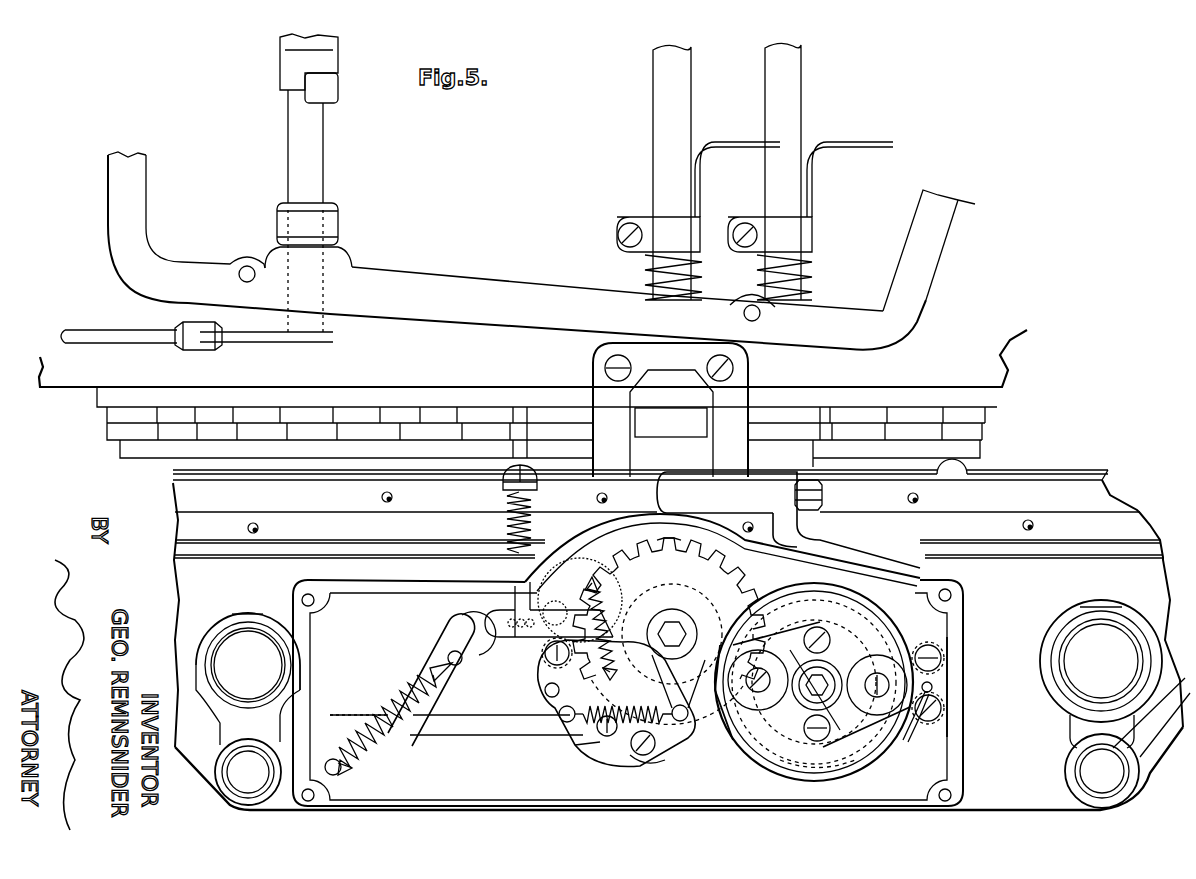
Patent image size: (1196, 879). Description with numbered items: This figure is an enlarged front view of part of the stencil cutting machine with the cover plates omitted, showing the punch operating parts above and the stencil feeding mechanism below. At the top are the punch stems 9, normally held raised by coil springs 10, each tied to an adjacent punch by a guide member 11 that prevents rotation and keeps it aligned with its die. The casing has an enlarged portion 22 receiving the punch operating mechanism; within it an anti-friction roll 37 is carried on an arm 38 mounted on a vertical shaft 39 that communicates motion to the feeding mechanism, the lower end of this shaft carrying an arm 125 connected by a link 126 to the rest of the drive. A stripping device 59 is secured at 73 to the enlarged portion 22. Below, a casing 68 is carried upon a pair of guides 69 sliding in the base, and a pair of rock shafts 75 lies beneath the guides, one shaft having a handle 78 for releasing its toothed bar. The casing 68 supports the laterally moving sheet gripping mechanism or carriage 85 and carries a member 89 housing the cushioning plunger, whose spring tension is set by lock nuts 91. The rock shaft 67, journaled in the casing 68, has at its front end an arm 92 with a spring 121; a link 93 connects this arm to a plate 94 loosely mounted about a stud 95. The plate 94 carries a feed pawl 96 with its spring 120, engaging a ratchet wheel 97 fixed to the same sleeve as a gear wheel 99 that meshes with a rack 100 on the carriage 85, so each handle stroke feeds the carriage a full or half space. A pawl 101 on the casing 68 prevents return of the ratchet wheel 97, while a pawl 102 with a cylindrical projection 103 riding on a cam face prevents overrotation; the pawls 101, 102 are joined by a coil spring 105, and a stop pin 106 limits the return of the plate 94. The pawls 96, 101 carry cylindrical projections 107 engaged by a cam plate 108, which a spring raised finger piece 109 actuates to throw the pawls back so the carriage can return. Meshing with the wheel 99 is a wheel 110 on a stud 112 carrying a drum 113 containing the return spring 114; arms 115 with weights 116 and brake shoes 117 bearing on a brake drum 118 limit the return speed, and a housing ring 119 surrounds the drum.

The punch stems 9 is at (771, 90).
The coil springs 10 is at (902, 250).
The guide member 11 is at (699, 206).
The enlarged portion 22 is at (121, 201).
The anti-friction roll 37 is at (333, 93).
The arm 38 is at (299, 55).
The vertical shaft 39 is at (295, 159).
The stripping device 59 is at (725, 423).
The shaft 67 is at (470, 628).
The casing 68 is at (966, 709).
The guides 69 is at (679, 661).
The securing point 73 is at (612, 365).
The rock shafts 75 is at (667, 736).
The handle 78 is at (1143, 728).
The sheet gripping mechanism 85 is at (967, 474).
The member 89 is at (722, 531).
The lock nuts 91 is at (824, 495).
The arm 92 is at (449, 652).
The link 93 is at (460, 726).
The plate 94 is at (645, 680).
The stud 95 is at (673, 625).
The feed pawl 96 is at (657, 748).
The ratchet wheel 97 is at (702, 692).
The gear wheel 99 is at (740, 593).
The rack 100 is at (673, 537).
The pawl 101 is at (565, 676).
The pawl 102 is at (578, 573).
The cylindrical projection 103 is at (587, 553).
The coil spring 105 is at (560, 710).
The stop pin 106 is at (546, 692).
The cylindrical projection 107 is at (660, 740).
The cam plate 108 is at (617, 628).
The finger piece 109 is at (514, 517).
The wheel 110 is at (955, 625).
The stud 112 is at (813, 697).
The drum 113 is at (828, 760).
The spring 114 is at (935, 687).
The arms 115 is at (837, 727).
The weights 116 is at (905, 560).
The brake shoes 117 is at (805, 700).
The brake drum 118 is at (795, 668).
The housing ring 119 is at (905, 738).
The spring 120 is at (620, 720).
The spring 121 is at (362, 718).
The arm 125 is at (255, 337).
The link 126 is at (102, 337).